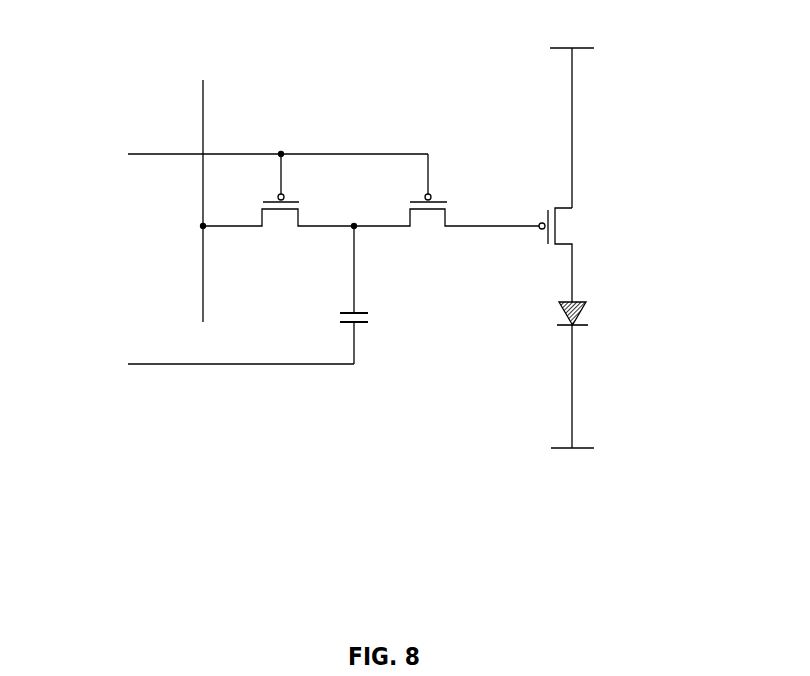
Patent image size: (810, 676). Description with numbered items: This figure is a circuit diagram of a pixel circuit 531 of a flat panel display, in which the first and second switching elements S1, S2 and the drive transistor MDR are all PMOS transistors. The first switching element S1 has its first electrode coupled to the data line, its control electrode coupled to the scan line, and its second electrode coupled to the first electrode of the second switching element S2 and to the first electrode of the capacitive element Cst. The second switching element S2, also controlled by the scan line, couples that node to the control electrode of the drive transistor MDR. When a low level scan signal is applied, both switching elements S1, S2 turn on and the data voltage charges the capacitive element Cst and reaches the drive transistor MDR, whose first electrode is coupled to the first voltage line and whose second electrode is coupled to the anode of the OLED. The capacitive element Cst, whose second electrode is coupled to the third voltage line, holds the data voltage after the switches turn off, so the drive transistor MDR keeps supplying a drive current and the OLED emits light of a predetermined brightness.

The pixel circuit 531 is at (640, 126).
The first switching element S1 is at (278, 227).
The second switching element S2 is at (446, 227).
The capacitive element Cst is at (337, 295).
The drive transistor MDR is at (577, 255).
The organic light emitting diode OLED is at (602, 375).